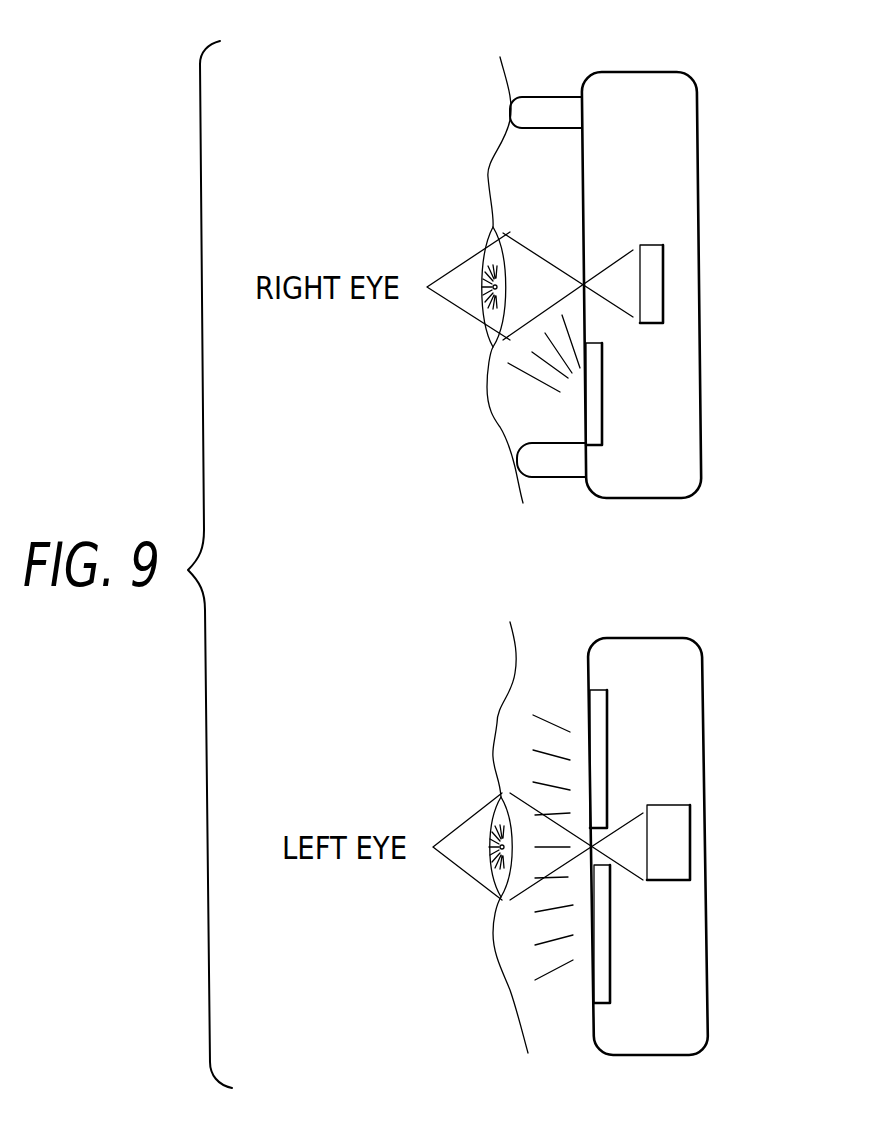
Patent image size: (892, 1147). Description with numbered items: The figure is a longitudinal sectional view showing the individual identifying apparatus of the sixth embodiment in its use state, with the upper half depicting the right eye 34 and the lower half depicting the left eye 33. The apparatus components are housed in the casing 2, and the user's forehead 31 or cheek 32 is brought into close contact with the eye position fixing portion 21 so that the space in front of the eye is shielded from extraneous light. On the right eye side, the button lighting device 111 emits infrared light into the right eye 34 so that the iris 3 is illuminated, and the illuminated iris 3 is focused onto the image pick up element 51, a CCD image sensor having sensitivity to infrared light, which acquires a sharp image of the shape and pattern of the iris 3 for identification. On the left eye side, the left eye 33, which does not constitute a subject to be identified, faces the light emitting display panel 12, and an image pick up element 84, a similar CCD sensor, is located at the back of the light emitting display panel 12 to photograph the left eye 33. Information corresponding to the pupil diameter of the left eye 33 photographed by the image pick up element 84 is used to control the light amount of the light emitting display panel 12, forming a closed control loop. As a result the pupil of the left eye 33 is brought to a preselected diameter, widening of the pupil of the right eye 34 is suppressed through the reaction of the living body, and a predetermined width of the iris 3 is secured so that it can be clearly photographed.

The casing 2 is at (699, 166).
The eye position fixing portion 21 is at (563, 96).
The forehead 31 is at (501, 67).
The cheek 32 is at (522, 493).
The right eye 34 is at (459, 264).
The iris 3 is at (484, 314).
The image pick up element 51 is at (663, 286).
The button lighting device 111 is at (602, 390).
The left eye 33 is at (467, 819).
The image pick up element 84 is at (691, 836).
The light emitting display panel 12 is at (610, 947).